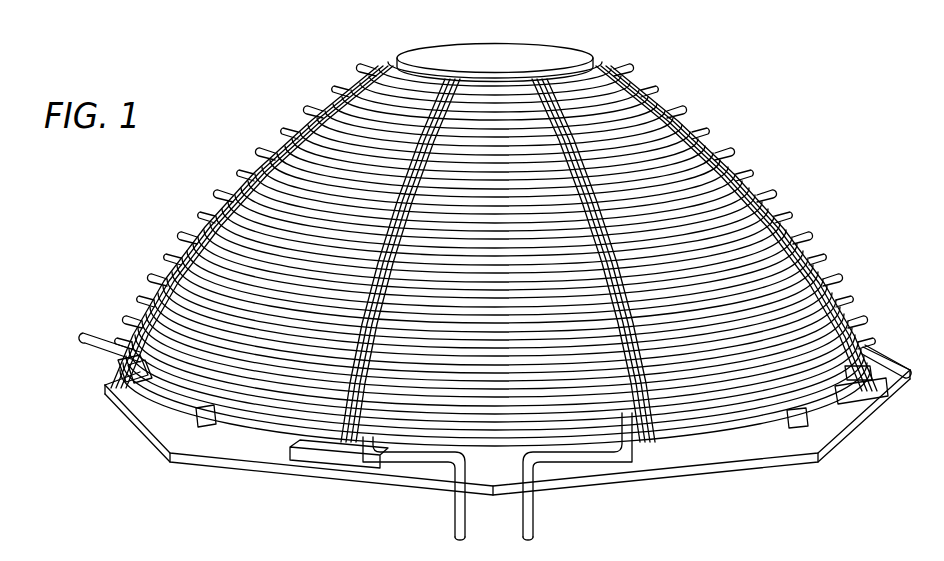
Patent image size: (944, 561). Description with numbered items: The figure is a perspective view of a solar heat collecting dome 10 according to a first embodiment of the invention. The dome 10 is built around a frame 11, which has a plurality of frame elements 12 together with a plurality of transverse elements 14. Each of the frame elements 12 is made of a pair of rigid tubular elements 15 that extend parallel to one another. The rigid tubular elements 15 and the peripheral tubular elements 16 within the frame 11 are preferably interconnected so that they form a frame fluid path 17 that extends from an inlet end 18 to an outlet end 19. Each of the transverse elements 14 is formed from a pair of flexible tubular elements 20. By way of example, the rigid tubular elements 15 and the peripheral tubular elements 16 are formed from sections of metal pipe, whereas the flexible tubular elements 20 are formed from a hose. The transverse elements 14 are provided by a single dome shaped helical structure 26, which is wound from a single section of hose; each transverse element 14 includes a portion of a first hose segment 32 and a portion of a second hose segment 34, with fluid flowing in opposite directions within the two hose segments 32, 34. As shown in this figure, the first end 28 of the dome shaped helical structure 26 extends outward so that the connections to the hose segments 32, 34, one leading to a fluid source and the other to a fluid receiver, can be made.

The solar heat collecting dome 10 is at (295, 80).
The frame 11 is at (653, 55).
The frame element 12 is at (600, 145).
The transverse element 14 is at (212, 205).
The rigid tubular element 15 is at (748, 186).
The peripheral tubular element 16 is at (738, 440).
The frame fluid path 17 is at (486, 486).
The inlet end 18 is at (453, 527).
The outlet end 19 is at (537, 527).
The flexible tubular element 20 is at (196, 252).
The dome shaped helical structure 26 is at (82, 358).
The first end 28 is at (84, 333).
The first hose segment 32 is at (136, 348).
The second hose segment 34 is at (137, 378).